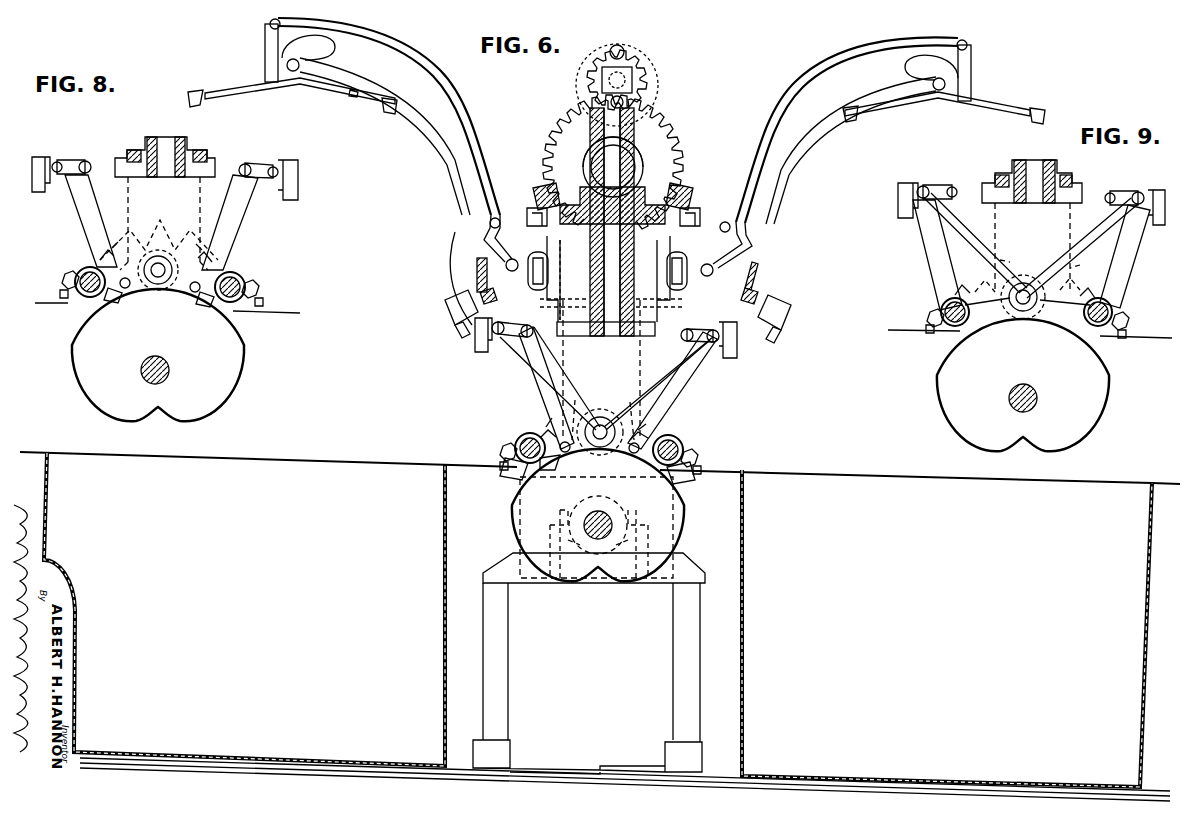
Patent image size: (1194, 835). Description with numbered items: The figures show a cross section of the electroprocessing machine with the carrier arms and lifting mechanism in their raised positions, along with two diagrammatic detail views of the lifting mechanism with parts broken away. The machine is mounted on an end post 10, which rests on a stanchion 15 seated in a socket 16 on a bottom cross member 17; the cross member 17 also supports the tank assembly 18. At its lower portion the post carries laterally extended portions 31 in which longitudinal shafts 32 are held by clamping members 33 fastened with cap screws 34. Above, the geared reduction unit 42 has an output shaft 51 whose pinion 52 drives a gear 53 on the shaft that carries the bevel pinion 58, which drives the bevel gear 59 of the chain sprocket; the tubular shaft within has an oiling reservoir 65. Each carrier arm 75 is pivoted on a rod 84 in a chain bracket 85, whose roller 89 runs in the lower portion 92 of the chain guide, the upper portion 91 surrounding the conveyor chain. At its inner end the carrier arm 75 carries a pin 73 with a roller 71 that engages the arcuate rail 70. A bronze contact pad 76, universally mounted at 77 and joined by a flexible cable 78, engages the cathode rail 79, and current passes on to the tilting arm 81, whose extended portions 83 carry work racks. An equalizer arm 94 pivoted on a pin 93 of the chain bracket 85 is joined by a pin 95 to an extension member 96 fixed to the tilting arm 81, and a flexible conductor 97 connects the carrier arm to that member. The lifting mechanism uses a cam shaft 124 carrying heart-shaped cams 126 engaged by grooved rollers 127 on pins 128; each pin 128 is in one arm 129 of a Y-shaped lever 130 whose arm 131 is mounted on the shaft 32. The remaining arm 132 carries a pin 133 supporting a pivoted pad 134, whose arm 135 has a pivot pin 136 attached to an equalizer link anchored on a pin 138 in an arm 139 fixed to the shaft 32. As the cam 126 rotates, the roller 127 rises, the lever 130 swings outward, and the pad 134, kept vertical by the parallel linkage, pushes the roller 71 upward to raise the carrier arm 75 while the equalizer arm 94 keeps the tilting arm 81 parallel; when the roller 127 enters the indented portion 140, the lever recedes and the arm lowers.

In FIG. 6, the end post 10 is at (640, 358).
In FIG. 8, the end post 10 is at (200, 205).
In FIG. 9, the end post 10 is at (1070, 226).
In FIG. 6, the stanchion 15 is at (483, 646).
In FIG. 6, the socket 16 is at (506, 740).
In FIG. 6, the bottom cross member 17 is at (592, 770).
In FIG. 6, the tank assembly 18 is at (280, 600).
In FIG. 6, the laterally extended portion 31 is at (506, 478).
In FIG. 6, the longitudinal shaft 32 is at (516, 442).
In FIG. 8, the longitudinal shaft 32 is at (78, 276).
In FIG. 9, the longitudinal shaft 32 is at (942, 306).
In FIG. 6, the clamping member 33 is at (503, 450).
In FIG. 8, the clamping member 33 is at (70, 274).
In FIG. 9, the clamping member 33 is at (930, 315).
In FIG. 6, the cap screw 34 is at (500, 465).
In FIG. 8, the cap screw 34 is at (62, 291).
In FIG. 9, the cap screw 34 is at (926, 328).
In FIG. 6, the geared reduction unit 42 is at (642, 90).
In FIG. 6, the output shaft 51 is at (590, 90).
In FIG. 6, the pinion 52 is at (634, 72).
In FIG. 6, the gear 53 is at (658, 130).
In FIG. 6, the bevel pinion 58 is at (638, 172).
In FIG. 6, the bevel gear 59 is at (540, 186).
In FIG. 6, the oiling reservoir 65 is at (586, 80).
In FIG. 6, the arcuate rail 70 is at (555, 358).
In FIG. 6, the roller 71 is at (452, 300).
In FIG. 6, the pin 73 is at (452, 320).
In FIG. 6, the carrier arm 75 is at (446, 167).
In FIG. 6, the contact pad 76 is at (495, 295).
In FIG. 6, the universal mounting 77 is at (725, 284).
In FIG. 6, the flexible cable 78 is at (477, 266).
In FIG. 6, the cathode rail 79 is at (612, 305).
In FIG. 6, the tilting arm 81 is at (270, 86).
In FIG. 6, the extended portion 83 is at (195, 92).
In FIG. 6, the rod 84 is at (295, 72).
In FIG. 6, the chain bracket 85 is at (488, 240).
In FIG. 6, the roller 89 is at (548, 258).
In FIG. 6, the upper portion 91 is at (538, 210).
In FIG. 6, the lower portion 92 is at (607, 271).
In FIG. 6, the pin 93 is at (490, 222).
In FIG. 6, the equalizer arm 94 is at (468, 104).
In FIG. 6, the pin 95 is at (268, 25).
In FIG. 6, the extension member 96 is at (265, 57).
In FIG. 6, the flexible conductor 97 is at (326, 45).
In FIG. 6, the cam shaft 124 is at (606, 515).
In FIG. 8, the cam shaft 124 is at (166, 368).
In FIG. 9, the cam shaft 124 is at (1038, 398).
In FIG. 6, the cam 126 is at (672, 536).
In FIG. 8, the cam 126 is at (236, 384).
In FIG. 9, the cam 126 is at (1095, 370).
In FIG. 6, the grooved roller 127 is at (598, 418).
In FIG. 8, the grooved roller 127 is at (162, 256).
In FIG. 9, the grooved roller 127 is at (1023, 283).
In FIG. 6, the pin 128 is at (606, 416).
In FIG. 9, the pin 128 is at (1030, 282).
In FIG. 6, the arm 129 is at (575, 400).
In FIG. 8, the arm 129 is at (135, 240).
In FIG. 9, the arm 129 is at (1000, 272).
In FIG. 6, the Y-shaped lever 130 is at (614, 366).
In FIG. 9, the Y-shaped lever 130 is at (948, 236).
In FIG. 6, the arm 131 is at (540, 432).
In FIG. 8, the arm 131 is at (100, 258).
In FIG. 9, the arm 131 is at (960, 290).
In FIG. 6, the arm 132 is at (536, 380).
In FIG. 8, the arm 132 is at (88, 214).
In FIG. 6, the pin 133 is at (520, 340).
In FIG. 8, the pin 133 is at (88, 160).
In FIG. 6, the pad 134 is at (476, 348).
In FIG. 8, the pad 134 is at (38, 157).
In FIG. 9, the pad 134 is at (905, 183).
In FIG. 6, the arm 135 is at (492, 334).
In FIG. 8, the arm 135 is at (68, 158).
In FIG. 9, the arm 135 is at (952, 186).
In FIG. 6, the pivot pin 136 is at (494, 335).
In FIG. 8, the pivot pin 136 is at (56, 160).
In FIG. 9, the pivot pin 136 is at (923, 186).
In FIG. 6, the pin 138 is at (565, 452).
In FIG. 6, the arm 139 is at (552, 470).
In FIG. 8, the arm 139 is at (116, 303).
In FIG. 6, the indented portion 140 is at (600, 572).
In FIG. 8, the indented portion 140 is at (158, 418).
In FIG. 9, the indented portion 140 is at (1023, 441).